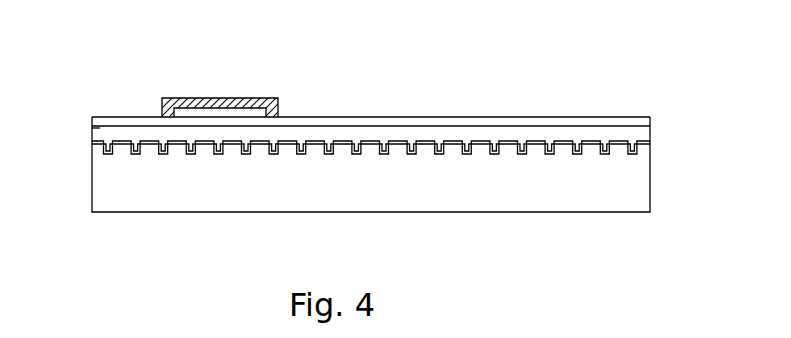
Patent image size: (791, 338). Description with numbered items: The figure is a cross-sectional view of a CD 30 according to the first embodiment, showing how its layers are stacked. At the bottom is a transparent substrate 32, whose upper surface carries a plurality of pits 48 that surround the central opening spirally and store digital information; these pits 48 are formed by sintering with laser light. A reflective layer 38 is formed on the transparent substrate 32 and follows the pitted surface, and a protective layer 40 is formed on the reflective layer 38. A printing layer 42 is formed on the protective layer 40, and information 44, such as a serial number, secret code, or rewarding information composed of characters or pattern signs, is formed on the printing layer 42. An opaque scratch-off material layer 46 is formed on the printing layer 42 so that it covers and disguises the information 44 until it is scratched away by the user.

The CD 30 is at (615, 72).
The transparent substrate 32 is at (400, 199).
The reflective layer 38 is at (92, 142).
The protective layer 40 is at (92, 128).
The printing layer 42 is at (513, 123).
The information 44 is at (242, 116).
The scratch-off material layer 46 is at (190, 98).
The pits 48 is at (150, 155).